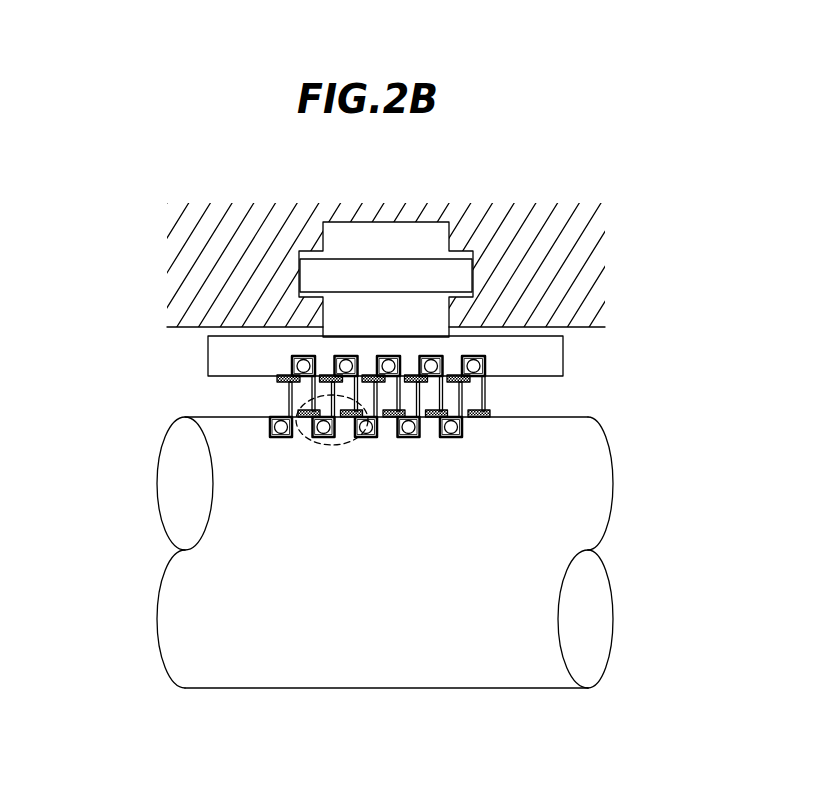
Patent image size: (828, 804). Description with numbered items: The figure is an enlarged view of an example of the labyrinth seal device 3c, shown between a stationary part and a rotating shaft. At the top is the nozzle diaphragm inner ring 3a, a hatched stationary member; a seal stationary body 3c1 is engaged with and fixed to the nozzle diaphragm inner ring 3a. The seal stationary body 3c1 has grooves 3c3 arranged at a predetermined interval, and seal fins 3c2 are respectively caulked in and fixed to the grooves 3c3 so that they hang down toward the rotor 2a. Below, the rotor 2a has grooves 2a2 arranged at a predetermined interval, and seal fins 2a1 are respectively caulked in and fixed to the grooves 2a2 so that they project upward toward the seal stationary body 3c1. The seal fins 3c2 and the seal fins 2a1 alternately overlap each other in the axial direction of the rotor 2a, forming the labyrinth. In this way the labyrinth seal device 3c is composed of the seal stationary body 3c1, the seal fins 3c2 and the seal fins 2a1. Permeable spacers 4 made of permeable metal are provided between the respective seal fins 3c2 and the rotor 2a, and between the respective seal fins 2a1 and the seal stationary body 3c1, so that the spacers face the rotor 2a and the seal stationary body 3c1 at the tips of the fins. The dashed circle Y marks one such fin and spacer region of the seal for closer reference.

The nozzle diaphragm inner ring 3a is at (238, 217).
The labyrinth seal device 3c is at (454, 393).
The seal stationary body 3c1 is at (538, 367).
The seal fins 3c2 is at (483, 390).
The grooves 3c3 is at (473, 357).
The seal fins 2a1 is at (485, 404).
The grooves 2a2 is at (447, 440).
The rotor 2a is at (590, 493).
The permeable spacers 4 is at (288, 413).
The region Y is at (330, 446).